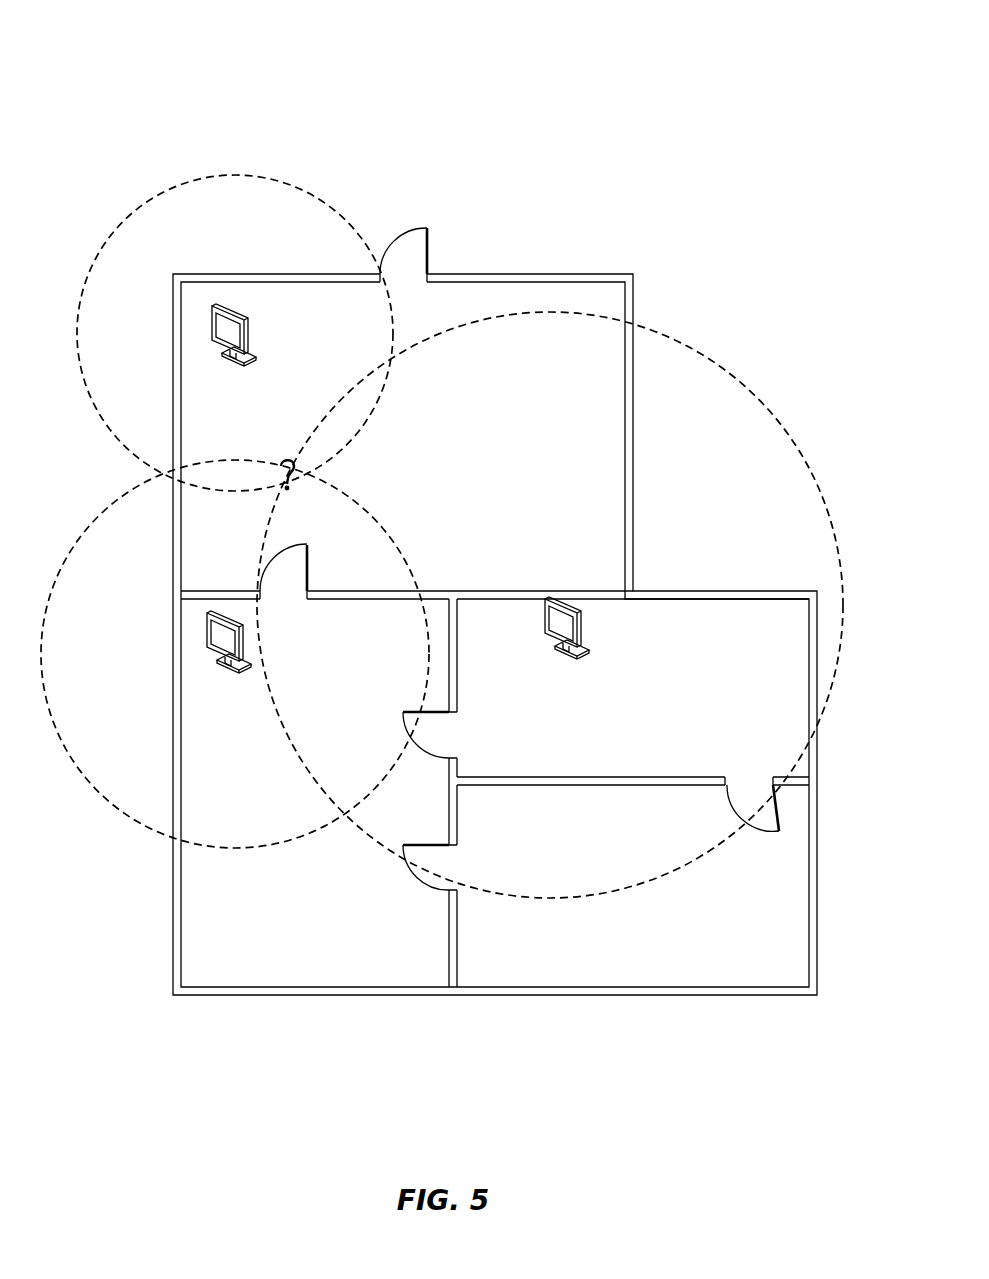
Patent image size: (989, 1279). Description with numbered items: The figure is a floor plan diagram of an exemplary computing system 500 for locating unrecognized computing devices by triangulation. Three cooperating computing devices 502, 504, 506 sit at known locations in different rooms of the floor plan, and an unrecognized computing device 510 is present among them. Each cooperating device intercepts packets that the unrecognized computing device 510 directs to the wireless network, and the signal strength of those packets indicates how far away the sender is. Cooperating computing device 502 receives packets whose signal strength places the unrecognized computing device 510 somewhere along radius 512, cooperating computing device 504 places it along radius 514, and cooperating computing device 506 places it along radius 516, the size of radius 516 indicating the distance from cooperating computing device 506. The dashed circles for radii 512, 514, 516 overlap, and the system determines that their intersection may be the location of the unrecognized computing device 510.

The environment with floor plan 500 is at (92, 78).
The cooperating computing device 502 is at (250, 347).
The cooperating computing device 504 is at (229, 670).
The cooperating computing device 506 is at (565, 652).
The unrecognized computing device 510 is at (297, 476).
The radius 512 is at (213, 177).
The radius 514 is at (122, 812).
The radius 516 is at (670, 335).